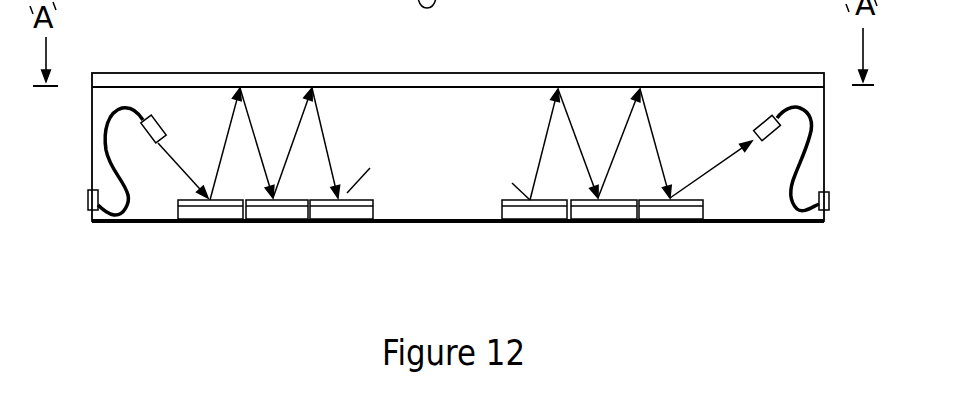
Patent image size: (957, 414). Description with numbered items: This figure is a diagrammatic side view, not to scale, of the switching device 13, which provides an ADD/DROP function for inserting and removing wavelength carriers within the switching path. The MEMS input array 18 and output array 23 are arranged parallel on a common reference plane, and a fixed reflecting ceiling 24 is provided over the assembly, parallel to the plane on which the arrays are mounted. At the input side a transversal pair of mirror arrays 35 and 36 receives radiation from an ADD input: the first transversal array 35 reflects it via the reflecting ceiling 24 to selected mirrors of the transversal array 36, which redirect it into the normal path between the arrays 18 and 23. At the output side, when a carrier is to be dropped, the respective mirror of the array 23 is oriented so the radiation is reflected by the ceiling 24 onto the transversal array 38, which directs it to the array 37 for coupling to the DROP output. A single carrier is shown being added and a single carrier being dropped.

The switching device 13 is at (592, 34).
The fixed reflecting plane 24 is at (432, 88).
The first transversal mirror array 35 is at (207, 212).
The transversal mirror array 36 is at (270, 212).
The input mirror array 18 is at (327, 212).
The output mirror array 23 is at (532, 212).
The transversal mirror array 38 is at (588, 212).
The transversal mirror array 37 is at (660, 212).